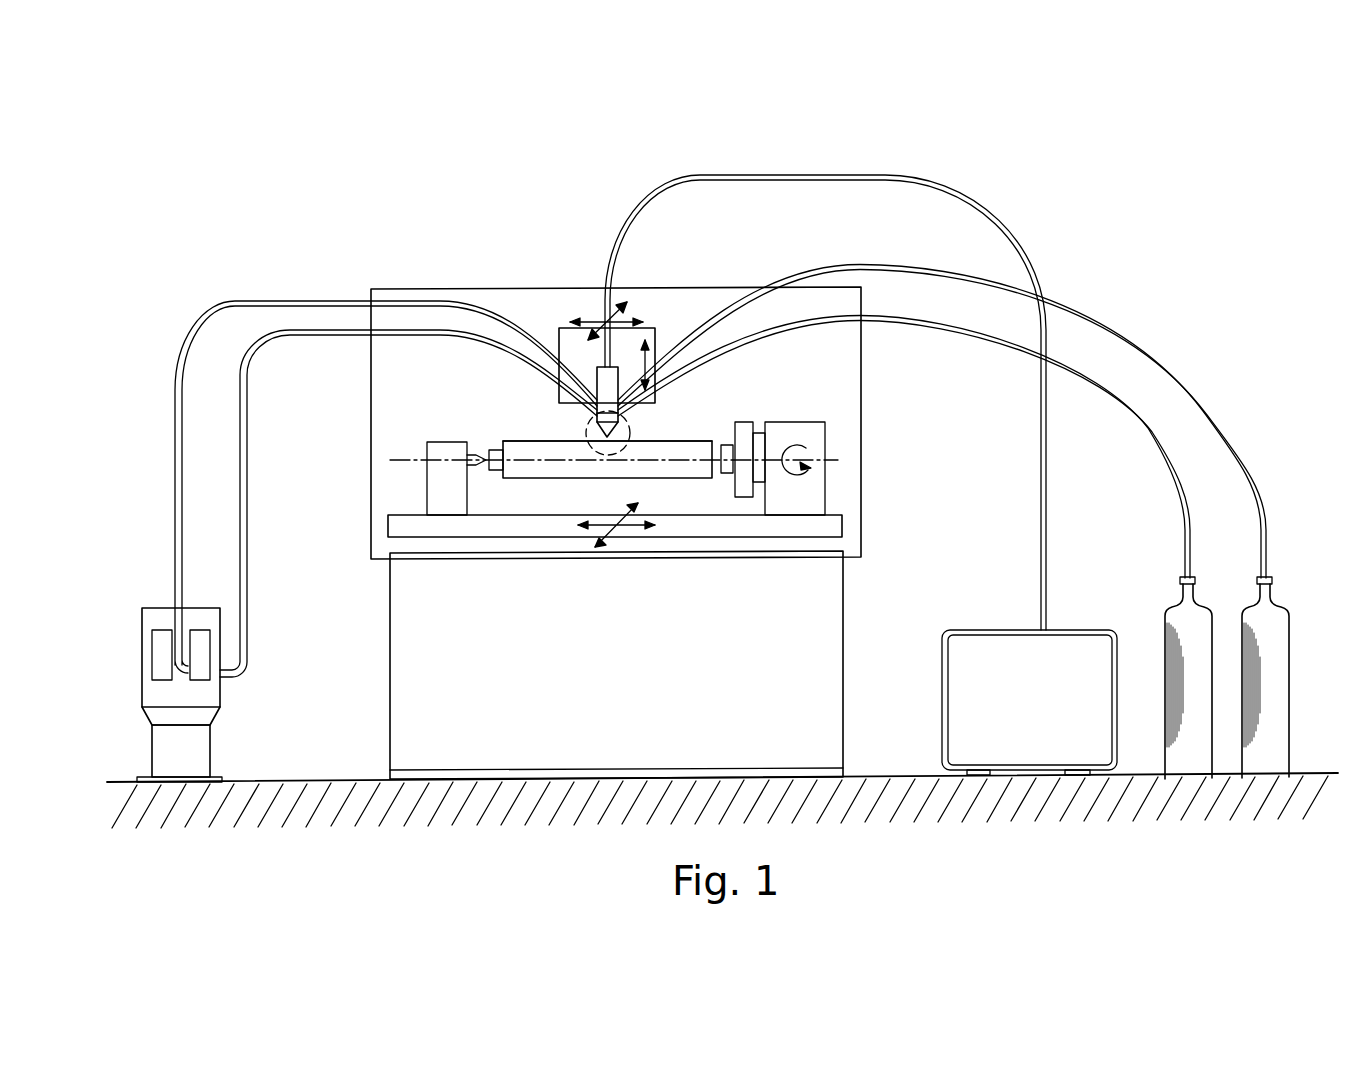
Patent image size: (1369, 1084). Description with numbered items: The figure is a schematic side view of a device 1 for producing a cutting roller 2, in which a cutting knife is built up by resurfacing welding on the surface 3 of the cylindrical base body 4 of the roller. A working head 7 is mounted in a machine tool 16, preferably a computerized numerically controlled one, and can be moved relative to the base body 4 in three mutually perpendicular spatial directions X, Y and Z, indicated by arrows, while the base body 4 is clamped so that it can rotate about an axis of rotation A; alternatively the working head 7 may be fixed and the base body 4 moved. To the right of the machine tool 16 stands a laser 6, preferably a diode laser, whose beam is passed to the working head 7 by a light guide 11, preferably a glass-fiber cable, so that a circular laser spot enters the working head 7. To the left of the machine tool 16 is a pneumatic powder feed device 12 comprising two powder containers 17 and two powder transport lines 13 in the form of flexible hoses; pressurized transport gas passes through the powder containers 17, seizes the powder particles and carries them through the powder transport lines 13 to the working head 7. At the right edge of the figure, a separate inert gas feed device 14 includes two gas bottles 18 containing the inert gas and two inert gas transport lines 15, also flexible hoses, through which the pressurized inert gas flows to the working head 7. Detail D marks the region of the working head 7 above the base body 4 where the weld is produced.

The device 1 is at (398, 215).
The cutting roller 2 is at (665, 402).
The surface 3 is at (540, 441).
The base body 4 is at (652, 470).
The laser 6 is at (1025, 660).
The working head 7 is at (558, 388).
The light guide 11 is at (785, 175).
The pneumatic powder feed device 12 is at (139, 612).
The powder transport lines 13 is at (263, 353).
The inert gas feed device 14 is at (1268, 460).
The inert gas transport lines 15 is at (1118, 410).
The machine tool 16 is at (633, 675).
The powder containers 17 is at (158, 667).
The gas bottles 18 is at (1275, 762).